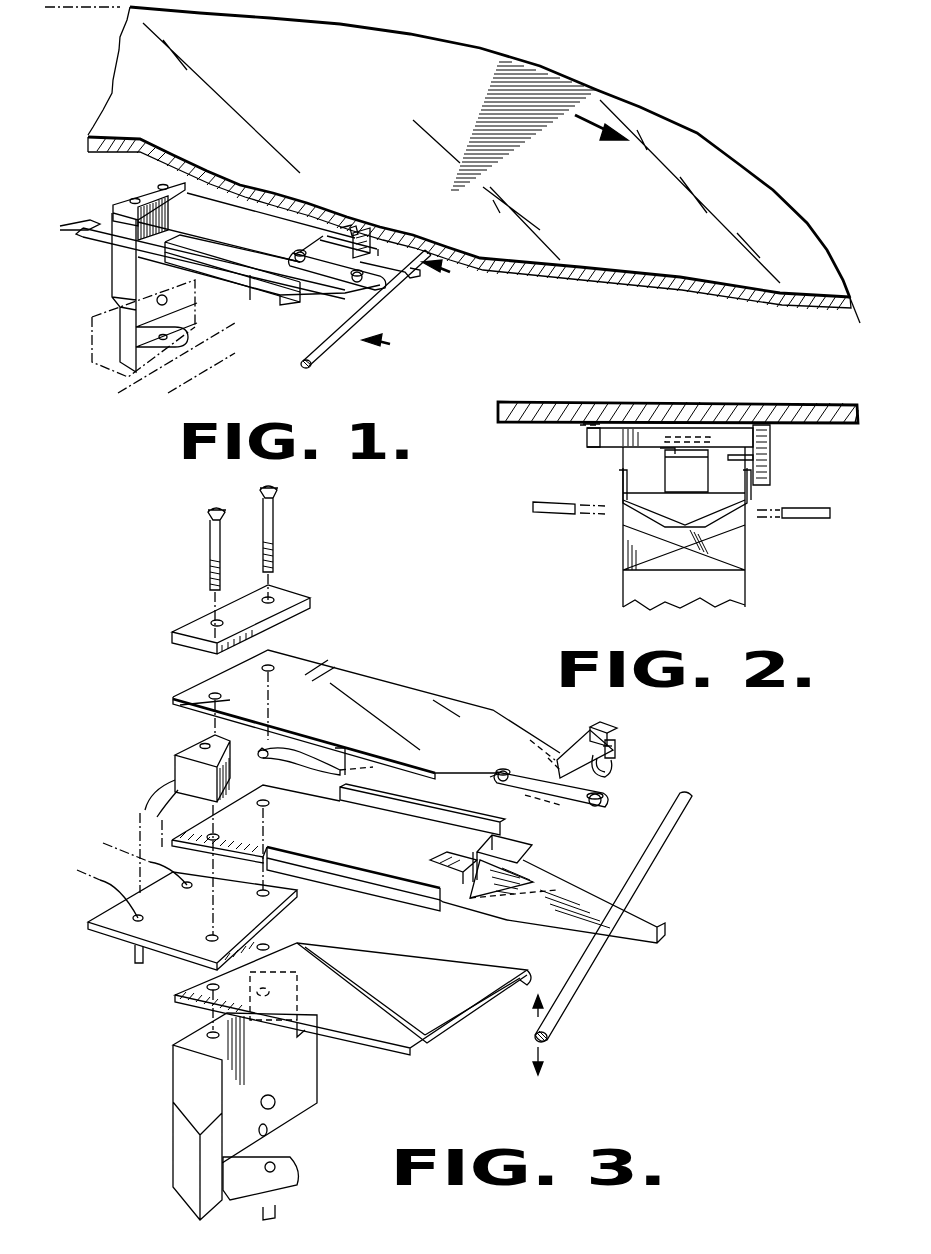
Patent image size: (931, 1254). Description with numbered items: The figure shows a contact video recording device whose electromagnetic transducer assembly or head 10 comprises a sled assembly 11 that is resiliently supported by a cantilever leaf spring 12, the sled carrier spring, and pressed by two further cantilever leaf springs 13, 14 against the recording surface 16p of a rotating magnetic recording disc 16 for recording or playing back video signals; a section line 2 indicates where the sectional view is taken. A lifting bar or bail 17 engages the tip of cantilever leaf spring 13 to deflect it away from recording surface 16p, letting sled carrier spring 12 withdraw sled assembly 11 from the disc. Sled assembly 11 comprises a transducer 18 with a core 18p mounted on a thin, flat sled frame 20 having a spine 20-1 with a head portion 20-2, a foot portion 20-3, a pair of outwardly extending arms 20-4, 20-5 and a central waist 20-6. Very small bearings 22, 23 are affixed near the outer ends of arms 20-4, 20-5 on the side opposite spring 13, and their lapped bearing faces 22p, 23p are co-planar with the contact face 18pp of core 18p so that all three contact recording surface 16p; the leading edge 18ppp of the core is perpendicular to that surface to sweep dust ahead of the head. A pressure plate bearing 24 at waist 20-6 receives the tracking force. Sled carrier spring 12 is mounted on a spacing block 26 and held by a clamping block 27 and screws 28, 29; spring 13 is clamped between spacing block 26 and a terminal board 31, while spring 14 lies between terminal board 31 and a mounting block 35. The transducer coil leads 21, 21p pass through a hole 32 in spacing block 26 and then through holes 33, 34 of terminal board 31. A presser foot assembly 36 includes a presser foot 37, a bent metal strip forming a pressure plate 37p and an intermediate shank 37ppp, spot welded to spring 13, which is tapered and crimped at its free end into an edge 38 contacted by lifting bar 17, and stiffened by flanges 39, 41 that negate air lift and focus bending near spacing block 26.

In FIG. 1, the section line 2 is at (445, 268).
In FIG. 1, the electromagnetic transducer assembly or head 10 is at (245, 358).
In FIG. 1, the sled assembly 11 is at (413, 230).
In FIG. 2, the sled assembly 11 is at (718, 431).
In FIG. 3, the sled assembly 11 is at (567, 750).
In FIG. 1, the cantilever leaf spring (sled carrier spring) 12 is at (222, 218).
In FIG. 3, the cantilever leaf spring (sled carrier spring) 12 is at (410, 690).
In FIG. 1, the cantilever leaf spring (presser foot carrier spring) 13 is at (257, 303).
In FIG. 2, the cantilever leaf spring (presser foot carrier spring) 13 is at (723, 507).
In FIG. 3, the cantilever leaf spring (presser foot carrier spring) 13 is at (467, 883).
In FIG. 1, the cantilever leaf spring 14 is at (285, 303).
In FIG. 2, the cantilever leaf spring 14 is at (650, 567).
In FIG. 3, the cantilever leaf spring 14 is at (365, 1040).
In FIG. 1, the magnetic recording disc 16 is at (692, 142).
In FIG. 2, the magnetic recording disc 16 is at (806, 404).
In FIG. 1, the recording surface 16p is at (660, 295).
In FIG. 2, the recording surface 16p is at (837, 432).
In FIG. 1, the lifting bar or bail 17 is at (307, 367).
In FIG. 2, the lifting bar or bail 17 is at (815, 520).
In FIG. 3, the lifting bar or bail 17 is at (687, 810).
In FIG. 1, the transducer 18 is at (370, 225).
In FIG. 2, the transducer 18 is at (773, 466).
In FIG. 3, the transducer 18 is at (617, 734).
In FIG. 1, the core 18p is at (362, 215).
In FIG. 2, the core 18p is at (775, 449).
In FIG. 3, the core 18p is at (610, 760).
In FIG. 2, the contact face 18pp is at (763, 410).
In FIG. 3, the contact face 18pp is at (606, 725).
In FIG. 1, the leading edge 18ppp is at (340, 230).
In FIG. 1, the sled frame 20 is at (337, 283).
In FIG. 2, the sled frame 20 is at (590, 450).
In FIG. 3, the sled frame 20 is at (557, 797).
In FIG. 3, the spine 20-1 is at (623, 775).
In FIG. 3, the head portion 20-2 is at (562, 797).
In FIG. 3, the foot portion 20-3 is at (587, 740).
In FIG. 3, the arm 20-4 is at (533, 753).
In FIG. 3, the arm 20-5 is at (580, 800).
In FIG. 3, the waist 20-6 is at (557, 763).
In FIG. 3, the transducer coil lead 21 is at (307, 747).
In FIG. 3, the transducer coil lead 21p is at (350, 747).
In FIG. 1, the bearing 22 is at (303, 247).
In FIG. 3, the bearing 22 is at (500, 782).
In FIG. 3, the bearing face 22p is at (498, 768).
In FIG. 1, the bearing 23 is at (423, 235).
In FIG. 2, the bearing 23 is at (590, 428).
In FIG. 3, the bearing 23 is at (607, 788).
In FIG. 2, the bearing face 23p is at (597, 425).
In FIG. 3, the bearing face 23p is at (590, 810).
In FIG. 2, the pressure plate bearing (presser foot bearing) 24 is at (668, 457).
In FIG. 3, the pressure plate bearing (presser foot bearing) 24 is at (540, 727).
In FIG. 1, the spacing block 26 is at (103, 227).
In FIG. 3, the spacing block 26 is at (175, 763).
In FIG. 1, the clamping block 27 is at (112, 205).
In FIG. 3, the clamping block 27 is at (187, 627).
In FIG. 1, the screw 28 is at (137, 200).
In FIG. 3, the screw 28 is at (212, 540).
In FIG. 1, the screw 29 is at (164, 186).
In FIG. 3, the screw 29 is at (275, 533).
In FIG. 1, the terminal board 31 is at (85, 233).
In FIG. 3, the terminal board 31 is at (170, 945).
In FIG. 3, the hole 32 is at (263, 758).
In FIG. 3, the hole 33 is at (138, 923).
In FIG. 3, the hole 34 is at (187, 887).
In FIG. 1, the mounting block 35 is at (117, 270).
In FIG. 3, the mounting block 35 is at (183, 1072).
In FIG. 2, the presser foot assembly 36 is at (623, 516).
In FIG. 3, the presser foot assembly 36 is at (404, 900).
In FIG. 2, the presser foot 37 is at (707, 476).
In FIG. 3, the presser foot 37 is at (527, 882).
In FIG. 3, the pressure plate 37p is at (480, 847).
In FIG. 3, the intermediate shank 37ppp is at (430, 868).
In FIG. 3, the edge 38 is at (557, 883).
In FIG. 1, the flange 39 is at (225, 263).
In FIG. 2, the flange 39 is at (620, 483).
In FIG. 3, the flange 39 is at (362, 882).
In FIG. 2, the flange 41 is at (750, 484).
In FIG. 3, the flange 41 is at (410, 807).